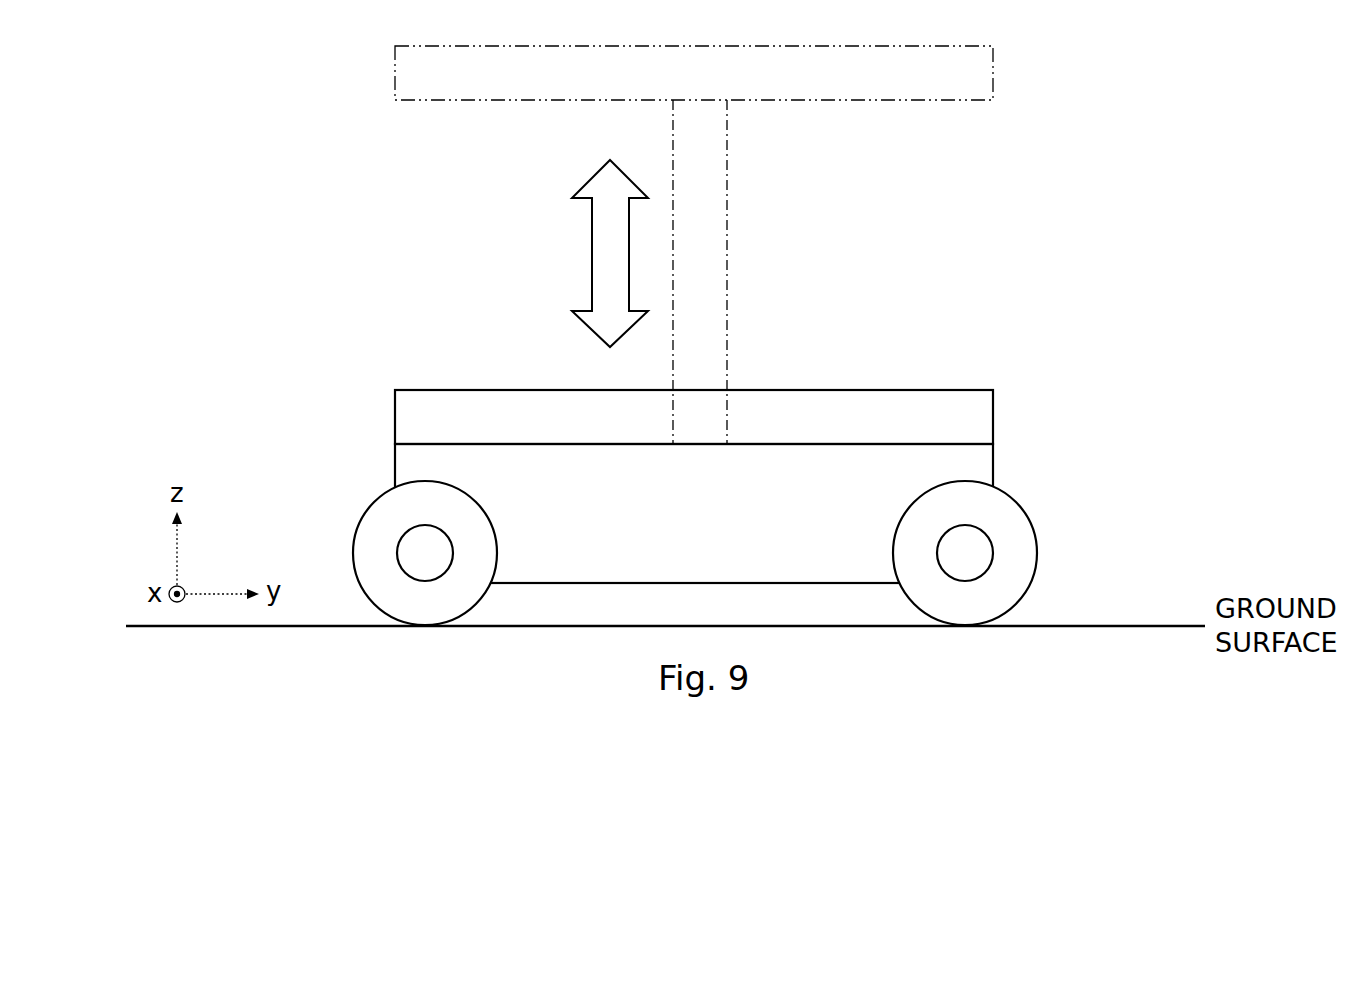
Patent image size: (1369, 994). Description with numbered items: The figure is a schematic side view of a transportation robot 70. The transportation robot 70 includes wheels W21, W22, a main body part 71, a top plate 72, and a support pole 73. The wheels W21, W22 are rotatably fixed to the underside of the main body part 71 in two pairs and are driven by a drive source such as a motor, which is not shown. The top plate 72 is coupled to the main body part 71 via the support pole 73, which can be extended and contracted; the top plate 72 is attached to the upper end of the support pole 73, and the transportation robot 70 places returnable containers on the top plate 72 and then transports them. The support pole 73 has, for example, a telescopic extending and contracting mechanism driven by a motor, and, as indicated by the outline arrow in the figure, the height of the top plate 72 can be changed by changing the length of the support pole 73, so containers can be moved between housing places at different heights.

The transportation robot 70 is at (1132, 124).
The main body part 71 is at (993, 470).
The top plate 72 is at (993, 70).
The support pole 73 is at (727, 312).
The wheel W21 is at (1037, 551).
The wheel W22 is at (357, 541).